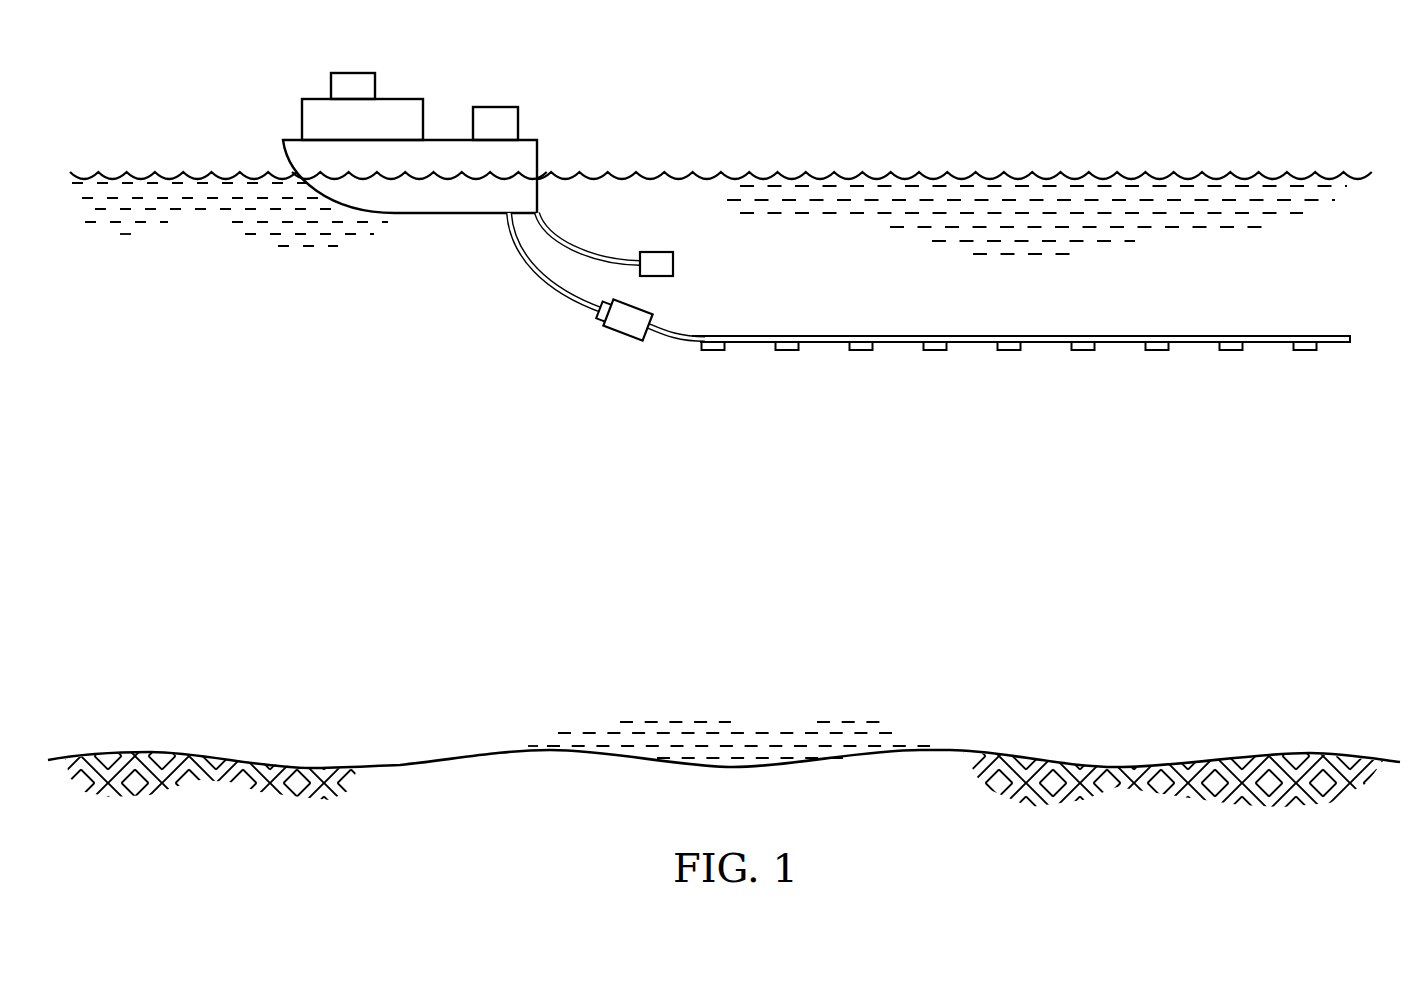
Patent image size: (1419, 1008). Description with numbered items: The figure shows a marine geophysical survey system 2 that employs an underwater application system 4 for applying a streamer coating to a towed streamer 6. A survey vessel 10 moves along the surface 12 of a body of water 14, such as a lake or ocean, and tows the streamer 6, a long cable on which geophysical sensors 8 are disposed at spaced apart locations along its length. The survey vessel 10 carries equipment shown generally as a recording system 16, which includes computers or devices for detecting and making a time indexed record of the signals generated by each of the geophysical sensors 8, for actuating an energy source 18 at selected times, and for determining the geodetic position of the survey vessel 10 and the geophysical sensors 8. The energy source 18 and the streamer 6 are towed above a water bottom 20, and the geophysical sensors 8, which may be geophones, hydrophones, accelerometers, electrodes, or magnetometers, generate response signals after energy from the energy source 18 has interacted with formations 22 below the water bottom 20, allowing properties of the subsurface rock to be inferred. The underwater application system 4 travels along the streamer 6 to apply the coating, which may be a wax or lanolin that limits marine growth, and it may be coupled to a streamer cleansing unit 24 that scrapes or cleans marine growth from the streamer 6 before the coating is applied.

The marine geophysical survey system 2 is at (397, 233).
The underwater application system 4 is at (598, 319).
The streamer 6 is at (1120, 336).
The geophysical sensors 8 is at (713, 350).
The survey vessel 10 is at (315, 98).
The surface 12 is at (170, 180).
The body of water 14 is at (320, 446).
The recording system 16 is at (493, 106).
The energy source 18 is at (673, 264).
The water bottom 20 is at (483, 750).
The formations 22 is at (1184, 845).
The streamer cleansing unit 24 is at (623, 336).